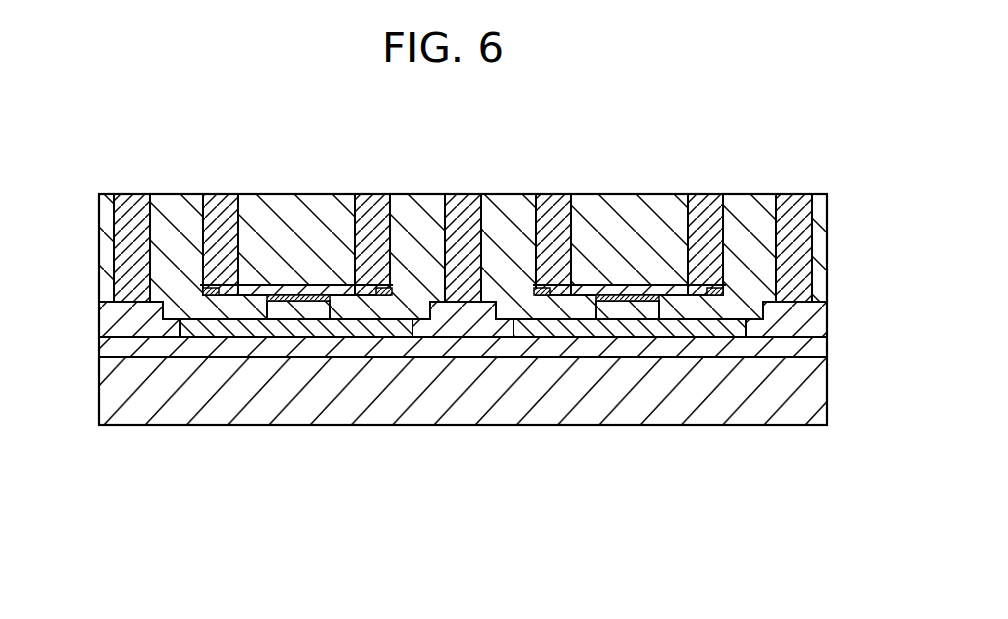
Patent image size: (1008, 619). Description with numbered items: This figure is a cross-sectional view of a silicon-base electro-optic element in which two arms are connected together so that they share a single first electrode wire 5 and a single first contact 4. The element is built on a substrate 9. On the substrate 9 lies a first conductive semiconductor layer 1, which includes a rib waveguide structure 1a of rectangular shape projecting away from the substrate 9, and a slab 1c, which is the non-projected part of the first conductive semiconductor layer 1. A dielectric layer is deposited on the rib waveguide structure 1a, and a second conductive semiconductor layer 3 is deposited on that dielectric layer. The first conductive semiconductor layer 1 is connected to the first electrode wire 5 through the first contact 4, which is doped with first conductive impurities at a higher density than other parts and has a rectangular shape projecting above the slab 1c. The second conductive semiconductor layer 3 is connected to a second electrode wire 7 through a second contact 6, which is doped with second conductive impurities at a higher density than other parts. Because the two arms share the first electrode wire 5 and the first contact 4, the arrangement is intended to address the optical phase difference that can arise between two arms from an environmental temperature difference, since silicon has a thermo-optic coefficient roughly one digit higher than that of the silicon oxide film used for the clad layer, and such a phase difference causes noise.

The first conductive semiconductor layer 1 is at (377, 499).
The rib waveguide structure 1a is at (300, 320).
The slab 1c is at (370, 327).
The second conductive semiconductor layer 3 is at (298, 295).
The first contact 4 is at (112, 320).
The first electrode wire 5 is at (130, 202).
The second contact 6 is at (396, 289).
The second electrode wire 7 is at (219, 197).
The substrate 9 is at (814, 402).